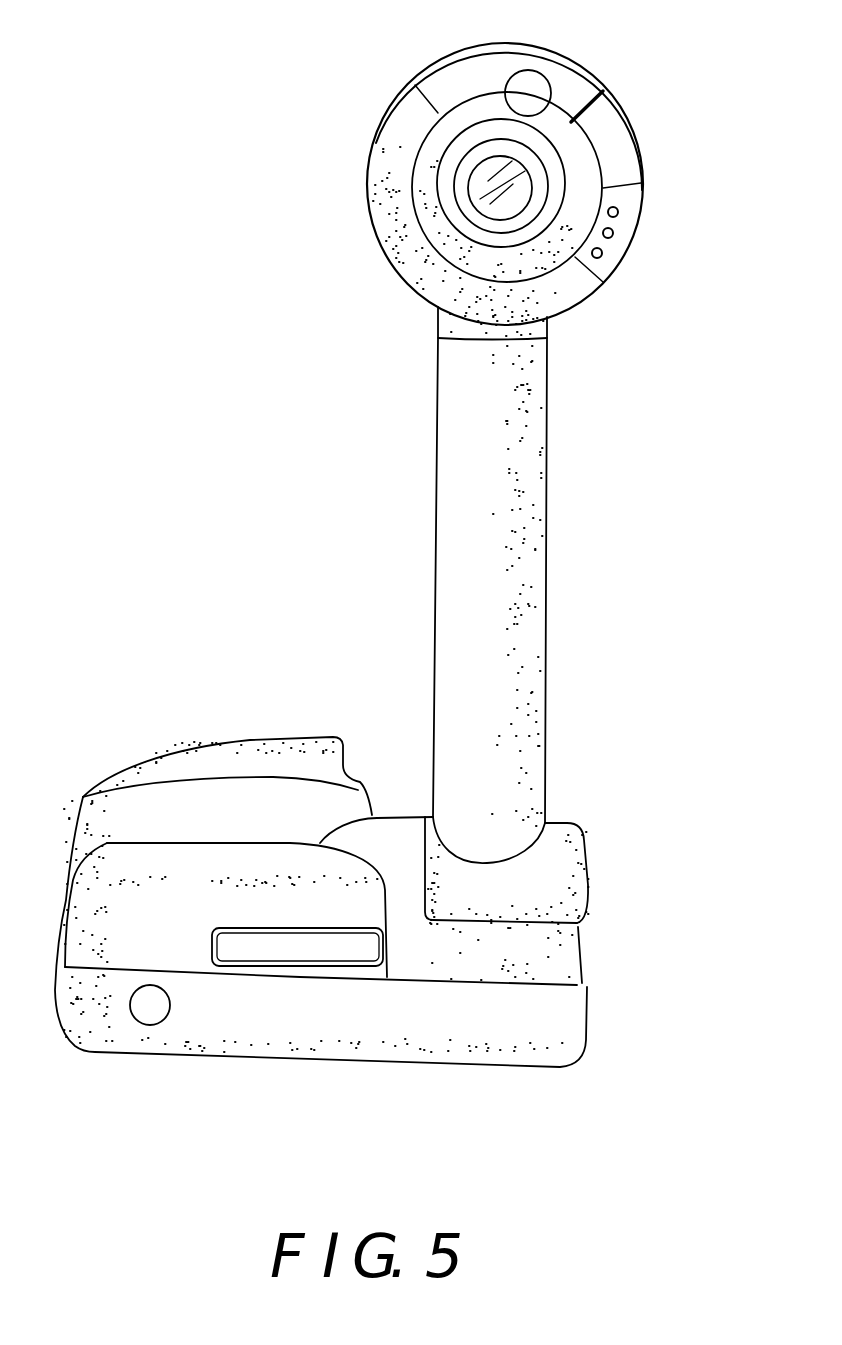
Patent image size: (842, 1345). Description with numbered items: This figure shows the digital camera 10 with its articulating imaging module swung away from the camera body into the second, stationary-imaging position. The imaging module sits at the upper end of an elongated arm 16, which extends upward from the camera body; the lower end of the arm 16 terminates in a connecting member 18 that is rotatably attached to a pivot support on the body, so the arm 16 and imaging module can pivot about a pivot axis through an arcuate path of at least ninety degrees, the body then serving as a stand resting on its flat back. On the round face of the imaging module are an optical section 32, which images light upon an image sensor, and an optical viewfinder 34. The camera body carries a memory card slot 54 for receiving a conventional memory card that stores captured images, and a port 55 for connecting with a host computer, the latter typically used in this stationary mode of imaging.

The digital camera 10 is at (380, 561).
The elongated arm 16 is at (502, 598).
The connecting member 18 is at (550, 873).
The optical section 32 is at (525, 193).
The optical viewfinder 34 is at (538, 92).
The memory card slot 54 is at (222, 947).
The port 55 is at (145, 1013).